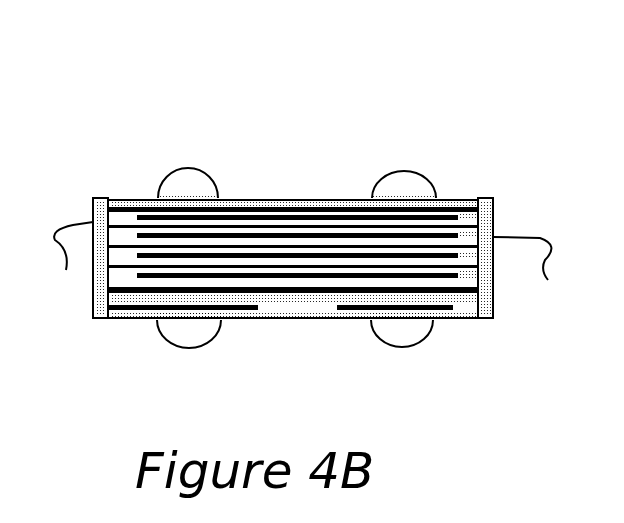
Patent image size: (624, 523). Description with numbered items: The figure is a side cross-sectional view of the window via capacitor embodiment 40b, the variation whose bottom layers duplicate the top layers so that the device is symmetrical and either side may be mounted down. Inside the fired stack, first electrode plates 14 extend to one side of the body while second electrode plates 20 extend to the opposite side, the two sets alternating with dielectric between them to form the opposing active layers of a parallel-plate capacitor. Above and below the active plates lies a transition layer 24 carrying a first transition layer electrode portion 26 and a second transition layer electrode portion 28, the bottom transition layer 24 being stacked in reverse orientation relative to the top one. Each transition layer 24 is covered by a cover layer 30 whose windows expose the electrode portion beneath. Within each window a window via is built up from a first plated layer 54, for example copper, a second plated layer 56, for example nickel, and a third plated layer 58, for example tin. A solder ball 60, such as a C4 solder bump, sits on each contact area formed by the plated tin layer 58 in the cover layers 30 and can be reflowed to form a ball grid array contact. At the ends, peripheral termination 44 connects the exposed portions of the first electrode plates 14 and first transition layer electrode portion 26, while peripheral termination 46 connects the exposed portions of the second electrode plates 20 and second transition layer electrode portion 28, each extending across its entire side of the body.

The window via capacitor embodiment 40b is at (497, 91).
The first electrode plate 14 is at (453, 310).
The second electrode plate 20 is at (113, 290).
The transition layer 24 is at (347, 310).
The first transition layer electrode portion 26 is at (465, 197).
The second transition layer electrode portion 28 is at (120, 198).
The cover layer 30 is at (255, 312).
The peripheral termination 44 is at (529, 271).
The peripheral termination 46 is at (59, 260).
The first plated layer 54 is at (224, 199).
The second plated layer 56 is at (215, 199).
The third plated layer 58 is at (207, 199).
The solder ball 60 is at (193, 183).